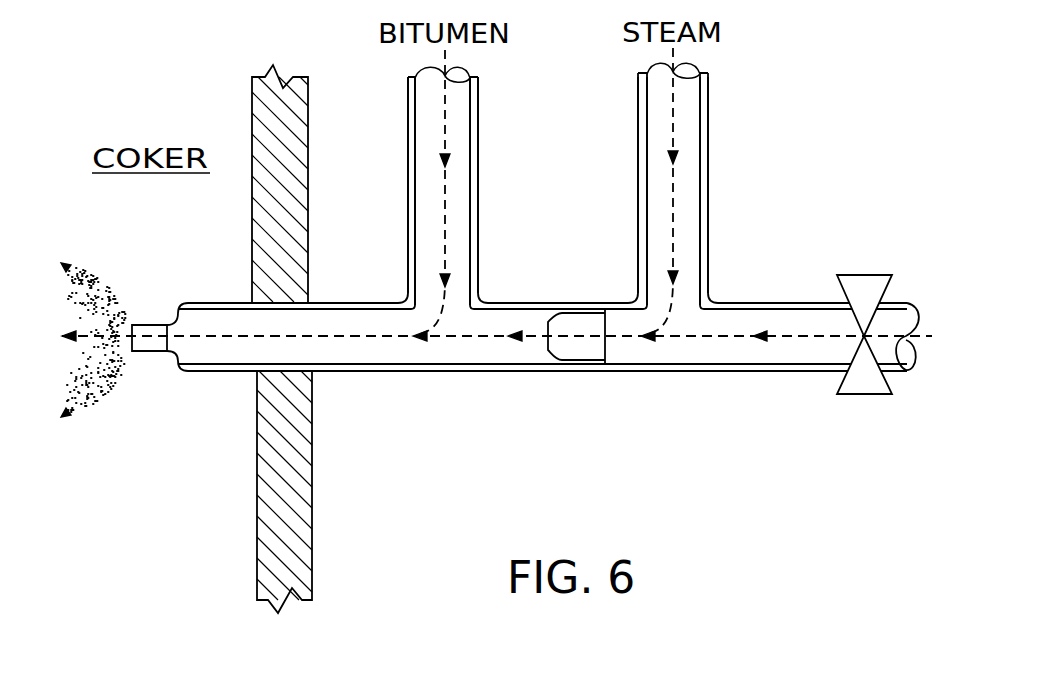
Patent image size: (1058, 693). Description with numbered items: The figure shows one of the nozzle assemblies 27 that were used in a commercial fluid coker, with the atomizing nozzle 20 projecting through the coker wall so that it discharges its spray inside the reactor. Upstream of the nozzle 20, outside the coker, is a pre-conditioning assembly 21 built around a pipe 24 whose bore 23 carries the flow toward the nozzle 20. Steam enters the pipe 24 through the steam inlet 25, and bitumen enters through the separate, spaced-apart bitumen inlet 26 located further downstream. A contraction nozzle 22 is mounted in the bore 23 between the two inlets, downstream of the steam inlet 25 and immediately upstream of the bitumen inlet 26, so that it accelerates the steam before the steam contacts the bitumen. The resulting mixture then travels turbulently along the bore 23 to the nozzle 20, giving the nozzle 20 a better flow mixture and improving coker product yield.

The nozzle 20 is at (145, 352).
The pre-conditioning assembly 21 is at (564, 381).
The contraction nozzle 22 is at (593, 352).
The bore 23 is at (677, 364).
The pipe 24 is at (397, 373).
The steam inlet 25 is at (708, 115).
The bitumen inlet 26 is at (478, 117).
The nozzle assembly 27 is at (664, 457).